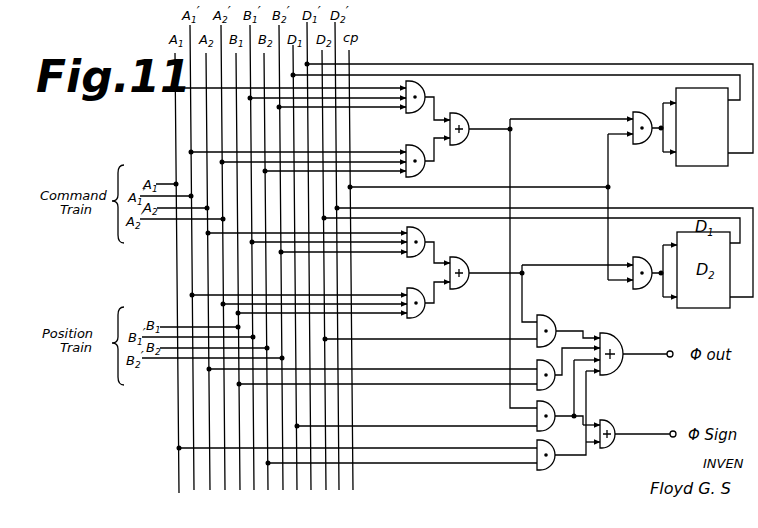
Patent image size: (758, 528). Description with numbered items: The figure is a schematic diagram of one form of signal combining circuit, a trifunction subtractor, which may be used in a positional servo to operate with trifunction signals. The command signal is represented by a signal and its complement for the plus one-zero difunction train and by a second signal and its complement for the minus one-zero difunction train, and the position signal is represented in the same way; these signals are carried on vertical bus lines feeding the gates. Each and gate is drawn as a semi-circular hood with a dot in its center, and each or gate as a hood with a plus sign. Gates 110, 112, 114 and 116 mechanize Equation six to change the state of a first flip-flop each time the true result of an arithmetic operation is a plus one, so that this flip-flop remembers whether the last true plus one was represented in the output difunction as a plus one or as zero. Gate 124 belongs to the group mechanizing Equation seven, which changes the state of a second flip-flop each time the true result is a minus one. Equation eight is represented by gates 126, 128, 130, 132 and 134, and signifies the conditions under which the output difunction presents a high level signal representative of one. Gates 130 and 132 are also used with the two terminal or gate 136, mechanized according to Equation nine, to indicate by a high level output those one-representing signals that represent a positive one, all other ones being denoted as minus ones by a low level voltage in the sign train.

The and gate 110 is at (424, 92).
The or gate 112 is at (464, 117).
The and gate 114 is at (422, 170).
The and gate 116 is at (646, 103).
The and gate 124 is at (641, 289).
The and gate 126 is at (549, 318).
The and gate 128 is at (551, 386).
The and gate 130 is at (551, 427).
The and gate 132 is at (552, 466).
The or gate 134 is at (618, 368).
The two terminal or gate 136 is at (612, 422).